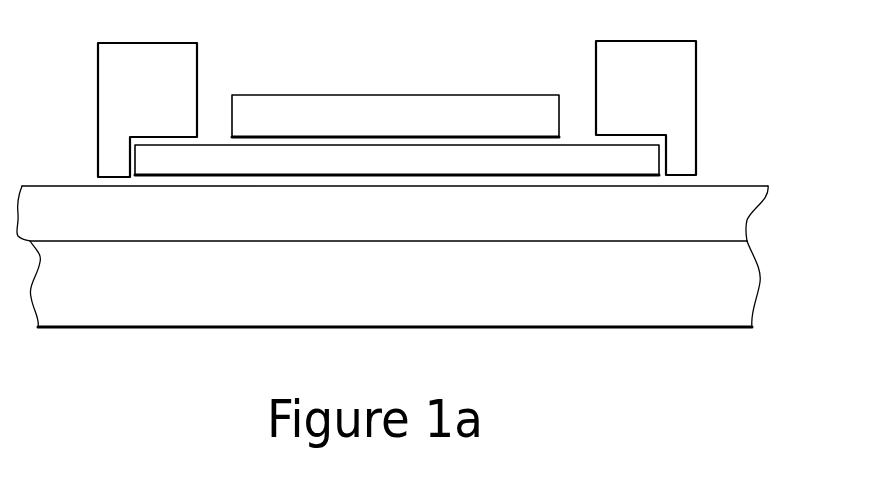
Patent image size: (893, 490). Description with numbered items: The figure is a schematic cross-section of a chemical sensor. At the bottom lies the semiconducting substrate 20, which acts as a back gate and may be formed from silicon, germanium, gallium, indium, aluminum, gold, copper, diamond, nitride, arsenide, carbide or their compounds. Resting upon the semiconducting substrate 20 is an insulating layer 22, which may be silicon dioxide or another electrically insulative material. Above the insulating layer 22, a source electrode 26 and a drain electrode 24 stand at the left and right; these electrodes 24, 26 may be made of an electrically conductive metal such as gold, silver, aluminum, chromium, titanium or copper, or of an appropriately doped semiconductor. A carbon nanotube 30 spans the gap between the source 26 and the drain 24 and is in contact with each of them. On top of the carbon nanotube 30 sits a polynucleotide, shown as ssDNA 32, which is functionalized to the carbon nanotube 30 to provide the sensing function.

The semiconducting substrate 20 is at (630, 297).
The insulating layer 22 is at (723, 212).
The drain electrode 24 is at (677, 80).
The source electrode 26 is at (123, 88).
The carbon nanotube 30 is at (209, 162).
The ssDNA 32 is at (355, 117).